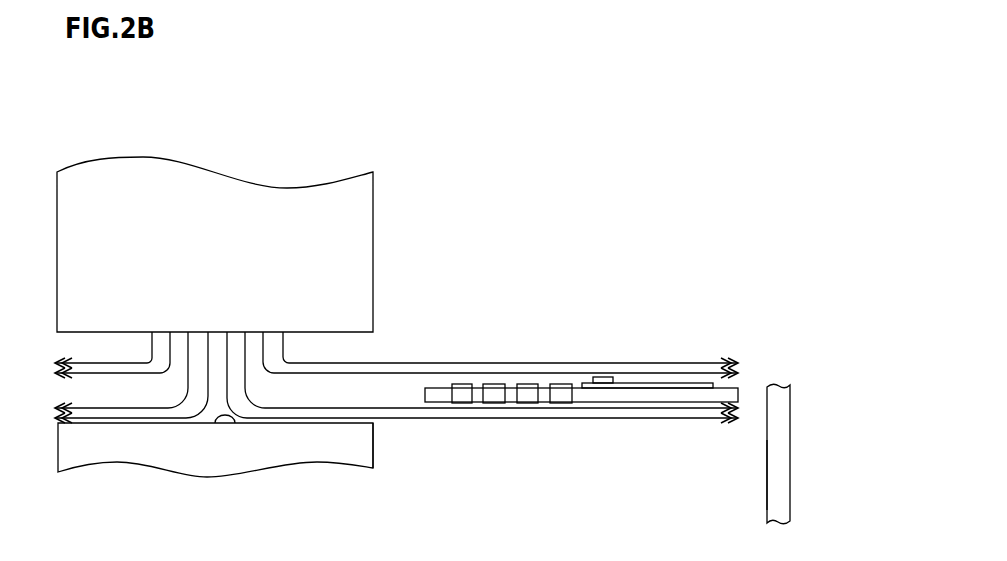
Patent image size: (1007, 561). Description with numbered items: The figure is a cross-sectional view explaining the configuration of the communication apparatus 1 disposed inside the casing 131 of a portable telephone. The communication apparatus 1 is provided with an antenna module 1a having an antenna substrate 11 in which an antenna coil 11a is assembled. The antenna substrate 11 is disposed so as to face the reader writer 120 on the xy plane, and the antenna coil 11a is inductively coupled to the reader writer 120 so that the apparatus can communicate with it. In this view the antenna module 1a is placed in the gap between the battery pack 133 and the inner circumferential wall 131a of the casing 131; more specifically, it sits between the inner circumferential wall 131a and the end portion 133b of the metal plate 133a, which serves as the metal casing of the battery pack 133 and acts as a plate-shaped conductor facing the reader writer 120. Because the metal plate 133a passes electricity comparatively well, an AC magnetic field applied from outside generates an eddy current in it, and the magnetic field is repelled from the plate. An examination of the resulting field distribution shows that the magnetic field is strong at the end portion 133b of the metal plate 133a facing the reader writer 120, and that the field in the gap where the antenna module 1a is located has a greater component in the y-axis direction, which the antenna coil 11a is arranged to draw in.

The communication apparatus 1 is at (477, 106).
The antenna module 1a is at (675, 304).
The antenna substrate 11 is at (655, 385).
The antenna coil 11a is at (647, 382).
The reader writer 120 is at (367, 259).
The casing 131 is at (790, 440).
The inner circumferential wall 131a is at (767, 475).
The battery pack 133 is at (207, 477).
The metal plate 133a is at (233, 423).
The end portion 133b is at (373, 427).